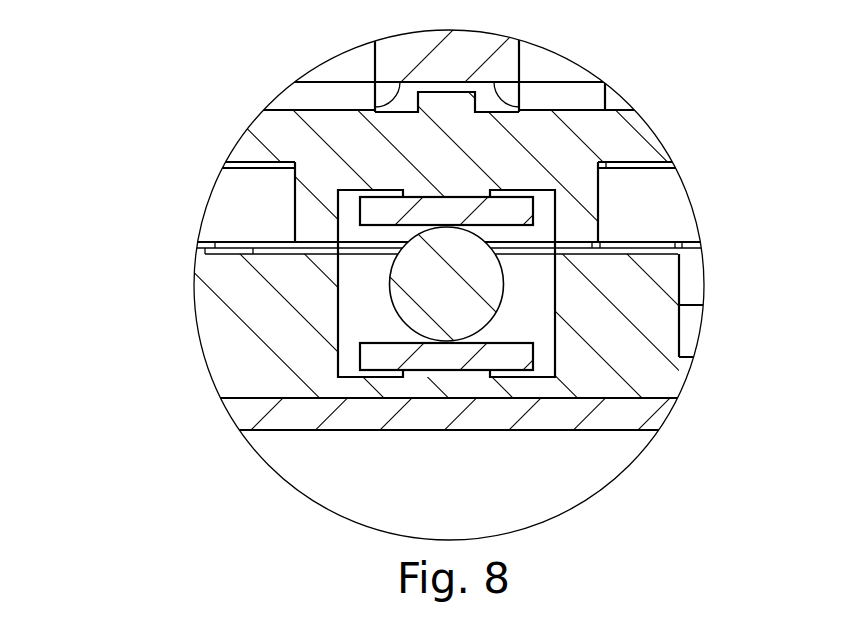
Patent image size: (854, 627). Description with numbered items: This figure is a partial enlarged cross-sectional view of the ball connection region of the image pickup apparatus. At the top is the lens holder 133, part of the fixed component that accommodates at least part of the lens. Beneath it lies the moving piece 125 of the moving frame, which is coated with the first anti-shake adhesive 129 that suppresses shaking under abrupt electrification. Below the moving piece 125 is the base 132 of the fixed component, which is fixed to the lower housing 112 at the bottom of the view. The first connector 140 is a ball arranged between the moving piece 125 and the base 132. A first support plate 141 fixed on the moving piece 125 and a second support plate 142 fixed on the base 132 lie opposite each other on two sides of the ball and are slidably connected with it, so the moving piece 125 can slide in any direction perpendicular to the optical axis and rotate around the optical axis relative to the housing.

The lower housing 112 is at (380, 415).
The moving piece 125 is at (352, 137).
The first anti-shake adhesive 129 is at (404, 99).
The base 132 is at (273, 318).
The lens holder 133 is at (450, 63).
The first connector 140 is at (427, 277).
The first support plate 141 is at (375, 213).
The second support plate 142 is at (382, 357).